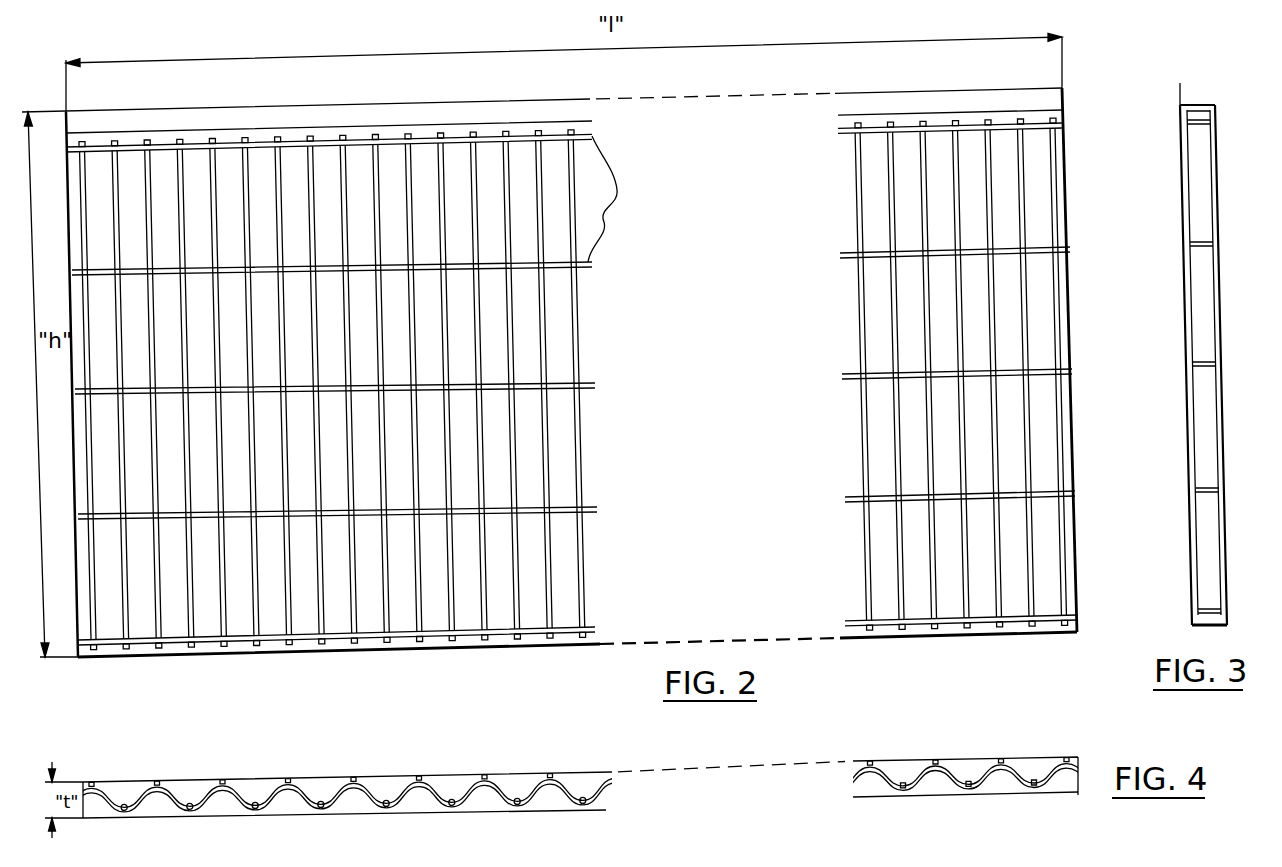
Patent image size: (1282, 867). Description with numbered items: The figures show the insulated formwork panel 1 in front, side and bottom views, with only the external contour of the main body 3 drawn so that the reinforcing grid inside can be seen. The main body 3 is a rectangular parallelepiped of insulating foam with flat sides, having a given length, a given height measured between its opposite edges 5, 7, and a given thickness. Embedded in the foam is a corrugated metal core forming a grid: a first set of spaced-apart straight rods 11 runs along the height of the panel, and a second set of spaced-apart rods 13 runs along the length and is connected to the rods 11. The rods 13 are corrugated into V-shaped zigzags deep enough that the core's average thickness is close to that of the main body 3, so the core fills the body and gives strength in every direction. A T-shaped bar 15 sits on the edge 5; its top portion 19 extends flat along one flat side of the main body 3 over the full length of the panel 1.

In FIG. 2, the insulated formwork panel 1 is at (1162, 347).
In FIG. 2, the main body 3 is at (1037, 178).
In FIG. 3, the main body 3 is at (1198, 170).
In FIG. 4, the main body 3 is at (1020, 757).
In FIG. 2, the edge 5 is at (940, 117).
In FIG. 3, the edge 5 is at (1196, 103).
In FIG. 4, the edge 5 is at (1068, 780).
In FIG. 2, the edge 7 is at (1019, 636).
In FIG. 3, the edge 7 is at (1200, 626).
In FIG. 4, the edge 7 is at (580, 805).
In FIG. 2, the straight rods 11 is at (614, 438).
In FIG. 3, the straight rods 11 is at (1210, 423).
In FIG. 4, the straight rods 11 is at (255, 804).
In FIG. 2, the corrugated rods 13 is at (583, 383).
In FIG. 3, the corrugated rods 13 is at (1199, 362).
In FIG. 4, the corrugated rods 13 is at (323, 808).
In FIG. 2, the T-shaped bar 15 is at (1063, 93).
In FIG. 2, the top portion 19 is at (287, 120).